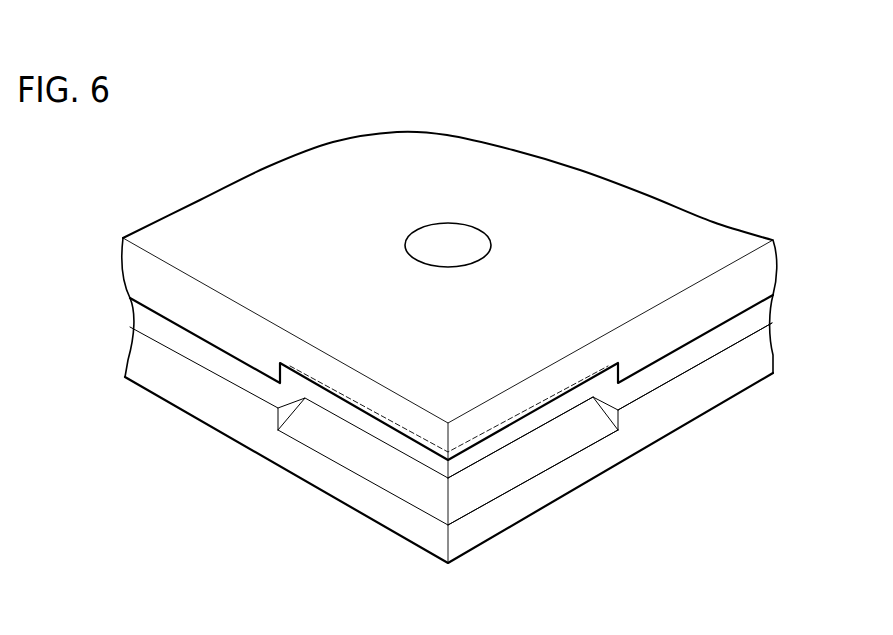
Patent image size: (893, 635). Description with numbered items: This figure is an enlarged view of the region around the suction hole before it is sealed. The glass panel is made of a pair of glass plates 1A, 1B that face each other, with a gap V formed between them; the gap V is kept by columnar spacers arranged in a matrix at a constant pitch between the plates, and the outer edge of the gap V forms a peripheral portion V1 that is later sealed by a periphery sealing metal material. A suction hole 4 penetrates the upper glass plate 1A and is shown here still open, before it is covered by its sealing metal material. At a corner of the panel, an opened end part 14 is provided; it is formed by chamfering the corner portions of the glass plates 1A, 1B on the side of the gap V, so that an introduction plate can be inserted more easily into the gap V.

The glass plate 1A is at (282, 213).
The glass plate 1B is at (242, 428).
The suction hole 4 is at (467, 247).
The peripheral portion of the gap V1 is at (700, 267).
The gap V is at (695, 355).
The opened end part 14 is at (557, 443).